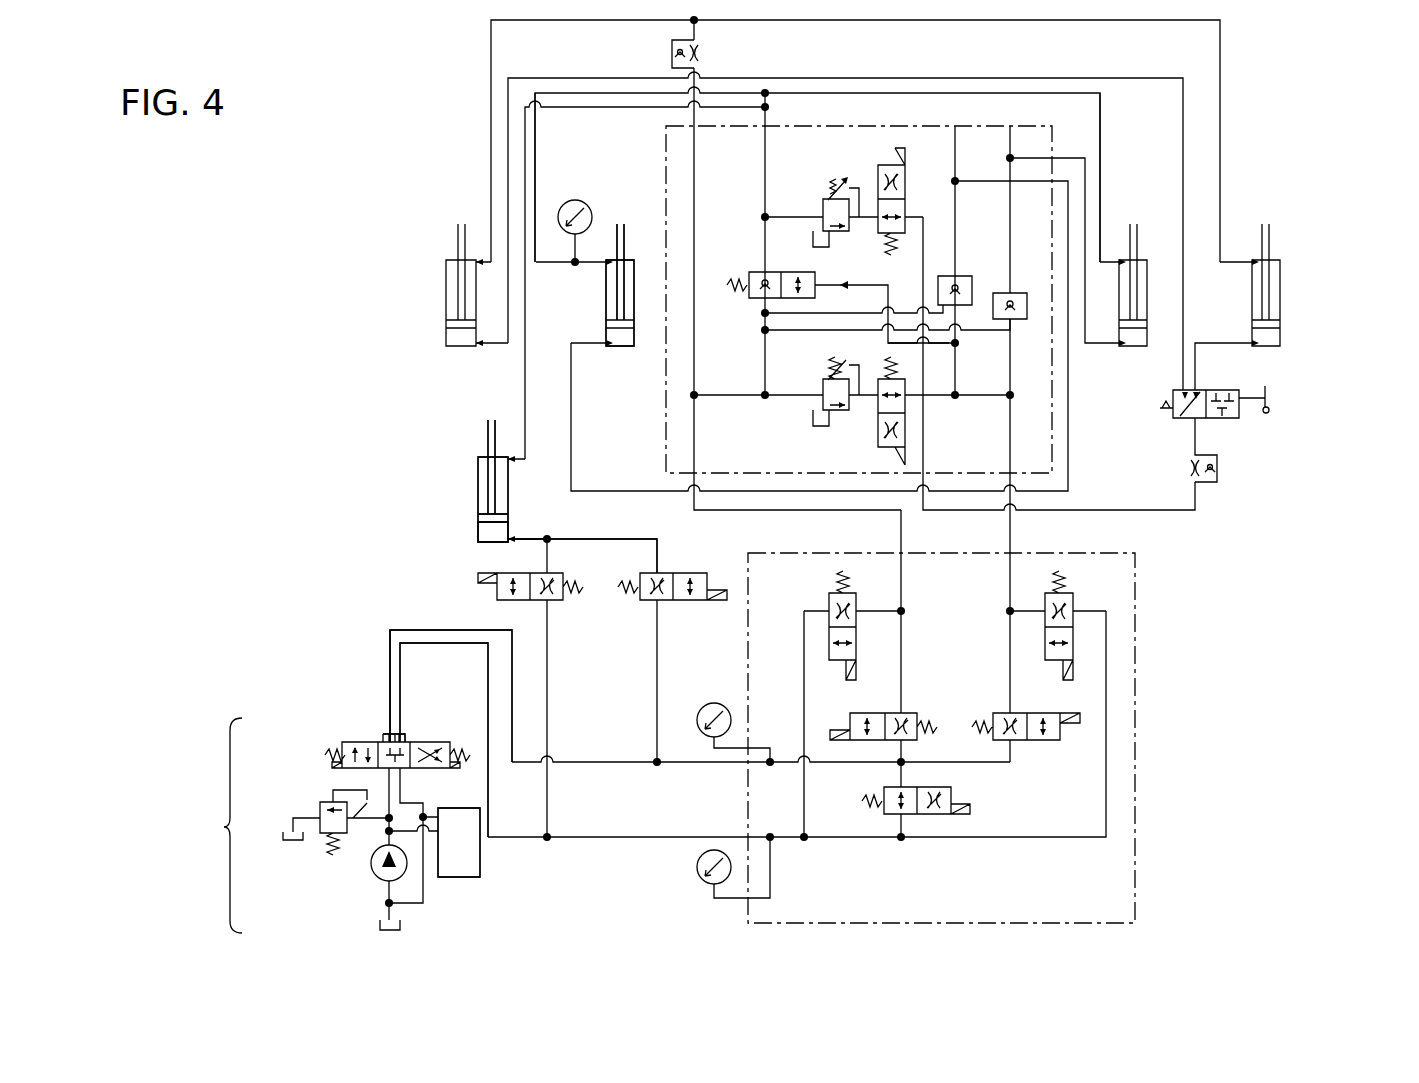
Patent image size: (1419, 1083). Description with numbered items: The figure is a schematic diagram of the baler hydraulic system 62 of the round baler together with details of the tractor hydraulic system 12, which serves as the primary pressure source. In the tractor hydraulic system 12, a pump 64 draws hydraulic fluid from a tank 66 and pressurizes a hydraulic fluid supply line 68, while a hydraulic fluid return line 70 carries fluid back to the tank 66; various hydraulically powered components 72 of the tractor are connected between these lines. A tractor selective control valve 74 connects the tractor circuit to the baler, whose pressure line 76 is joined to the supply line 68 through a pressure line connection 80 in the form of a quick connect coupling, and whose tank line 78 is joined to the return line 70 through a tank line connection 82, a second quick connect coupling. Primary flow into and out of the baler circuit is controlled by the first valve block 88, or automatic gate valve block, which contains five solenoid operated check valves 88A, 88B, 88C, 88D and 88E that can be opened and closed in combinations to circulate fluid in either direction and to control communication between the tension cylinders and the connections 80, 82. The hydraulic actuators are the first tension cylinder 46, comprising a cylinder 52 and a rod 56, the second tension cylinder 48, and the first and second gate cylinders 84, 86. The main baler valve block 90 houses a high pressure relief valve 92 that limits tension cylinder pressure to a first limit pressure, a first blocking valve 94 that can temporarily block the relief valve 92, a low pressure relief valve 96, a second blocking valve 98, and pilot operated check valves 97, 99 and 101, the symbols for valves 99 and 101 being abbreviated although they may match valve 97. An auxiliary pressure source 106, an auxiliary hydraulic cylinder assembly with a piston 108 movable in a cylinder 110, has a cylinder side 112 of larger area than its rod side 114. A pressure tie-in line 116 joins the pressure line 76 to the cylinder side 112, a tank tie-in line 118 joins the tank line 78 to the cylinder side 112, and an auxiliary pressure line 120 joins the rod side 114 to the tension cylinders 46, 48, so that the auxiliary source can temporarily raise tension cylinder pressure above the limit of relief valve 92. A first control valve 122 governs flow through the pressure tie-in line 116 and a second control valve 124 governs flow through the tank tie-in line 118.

The tractor hydraulic system 12 is at (205, 825).
The first tension cylinder 46 is at (638, 351).
The second tension cylinder 48 is at (1150, 240).
The cylinder 52 is at (606, 295).
The rod 56 is at (626, 240).
The baler hydraulic system 62 is at (1294, 84).
The pump 64 is at (372, 870).
The tank 66 is at (382, 925).
The hydraulic fluid supply line 68 is at (368, 785).
The hydraulic fluid return line 70 is at (432, 803).
The hydraulically powered components 72 is at (465, 850).
The tractor selective control valve 74 is at (332, 730).
The pressure line 76 is at (410, 625).
The tank line 78 is at (410, 645).
The pressure line connection 80 is at (386, 738).
The tank line connection 82 is at (405, 738).
The first gate cylinder 84 is at (446, 300).
The second gate cylinder 86 is at (1282, 294).
The first valve block 88 is at (1135, 765).
The solenoid operated check valve 88A is at (955, 792).
The solenoid operated check valve 88B is at (908, 713).
The solenoid operated check valve 88C is at (1003, 713).
The solenoid operated check valve 88D is at (829, 600).
The solenoid operated check valve 88E is at (1073, 600).
The main baler valve block 90 is at (1040, 126).
The high pressure relief valve 92 is at (823, 205).
The first blocking valve 94 is at (878, 176).
The low pressure relief valve 96 is at (823, 385).
The pilot operated check valve 97 is at (755, 300).
The second blocking valve 98 is at (878, 432).
The pilot operated check valve 99 is at (965, 278).
The pilot operated check valve 101 is at (1003, 322).
The auxiliary pressure source 106 is at (470, 475).
The piston 108 is at (480, 519).
The cylinder 110 is at (470, 458).
The cylinder side 112 is at (480, 537).
The rod side 114 is at (480, 510).
The pressure tie-in line 116 is at (660, 548).
The tank tie-in line 118 is at (545, 553).
The auxiliary pressure line 120 is at (536, 143).
The first control valve 122 is at (648, 606).
The second control valve 124 is at (556, 605).